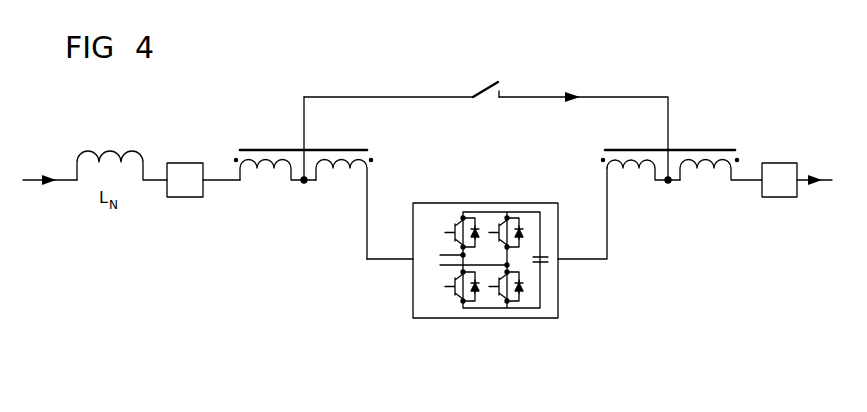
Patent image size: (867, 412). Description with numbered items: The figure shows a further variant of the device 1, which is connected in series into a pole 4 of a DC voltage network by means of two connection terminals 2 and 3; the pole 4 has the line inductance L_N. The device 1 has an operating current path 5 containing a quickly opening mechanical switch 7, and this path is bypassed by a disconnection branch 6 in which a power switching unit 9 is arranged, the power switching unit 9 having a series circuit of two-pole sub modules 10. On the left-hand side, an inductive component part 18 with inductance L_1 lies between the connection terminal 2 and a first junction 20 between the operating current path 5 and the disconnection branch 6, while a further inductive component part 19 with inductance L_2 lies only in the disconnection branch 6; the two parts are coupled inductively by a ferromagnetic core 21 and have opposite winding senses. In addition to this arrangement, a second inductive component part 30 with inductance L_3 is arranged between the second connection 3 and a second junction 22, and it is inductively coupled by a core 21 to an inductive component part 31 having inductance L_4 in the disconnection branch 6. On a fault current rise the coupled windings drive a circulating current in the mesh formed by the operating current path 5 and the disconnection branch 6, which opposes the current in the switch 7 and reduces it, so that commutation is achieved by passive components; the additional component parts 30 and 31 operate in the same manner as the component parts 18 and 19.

The device 1 is at (698, 92).
The connection terminal 2 is at (185, 163).
The connection terminal 3 is at (777, 163).
The pole 4 is at (32, 178).
The operating current path 5 is at (357, 97).
The disconnection branch 6 is at (389, 262).
The mechanical switch 7 is at (478, 91).
The power switching unit 9 is at (486, 296).
The sub module 10 is at (543, 316).
The inductive component part 18 is at (233, 146).
The inductive component part 19 is at (380, 146).
The first junction 20 is at (304, 184).
The core 21 is at (277, 149).
The second junction 22 is at (607, 168).
The second inductive component part 30 is at (742, 144).
The inductive component part 31 is at (596, 145).